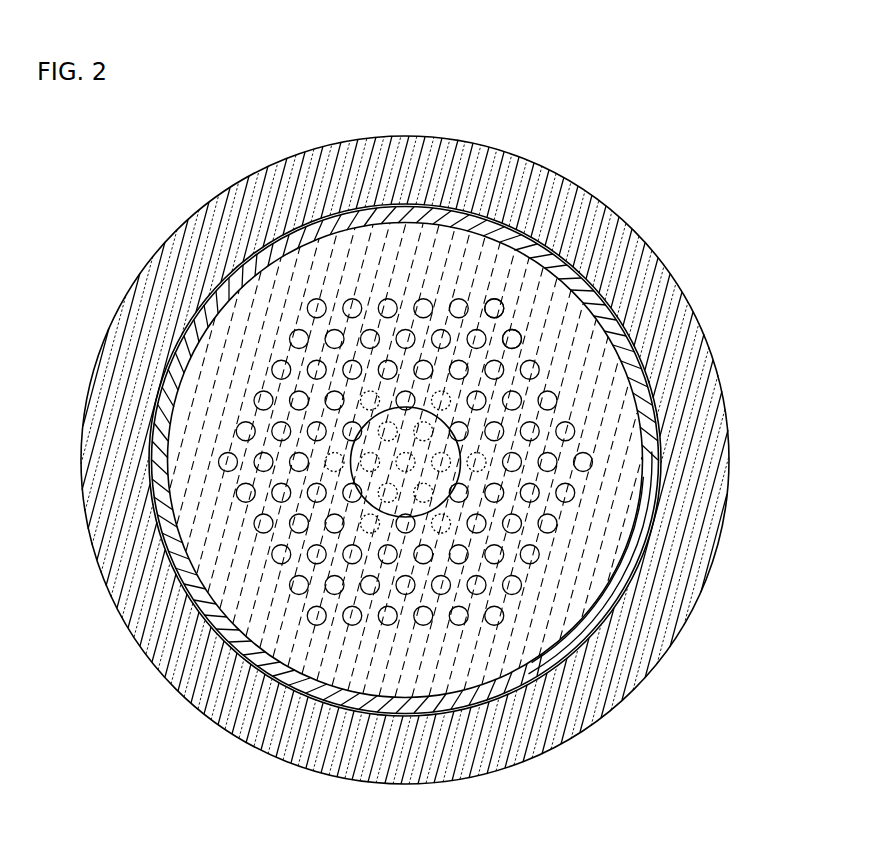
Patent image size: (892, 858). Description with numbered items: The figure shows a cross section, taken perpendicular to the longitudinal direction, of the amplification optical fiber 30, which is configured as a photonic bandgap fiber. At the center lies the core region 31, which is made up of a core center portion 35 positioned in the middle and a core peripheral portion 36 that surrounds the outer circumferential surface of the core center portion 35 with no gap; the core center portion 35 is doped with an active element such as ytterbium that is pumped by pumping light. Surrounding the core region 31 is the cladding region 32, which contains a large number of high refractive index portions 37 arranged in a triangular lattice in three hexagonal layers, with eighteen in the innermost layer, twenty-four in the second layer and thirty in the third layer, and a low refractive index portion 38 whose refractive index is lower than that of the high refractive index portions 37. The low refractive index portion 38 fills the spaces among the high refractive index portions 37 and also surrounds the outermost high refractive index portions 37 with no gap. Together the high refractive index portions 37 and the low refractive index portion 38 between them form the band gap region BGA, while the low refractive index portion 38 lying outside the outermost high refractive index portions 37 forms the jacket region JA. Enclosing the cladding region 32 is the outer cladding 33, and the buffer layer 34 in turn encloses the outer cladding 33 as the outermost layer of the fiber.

The amplification optical fiber 30 is at (660, 152).
The core region 31 is at (760, 292).
The cladding region 32 is at (700, 203).
The outer cladding 33 is at (647, 545).
The buffer layer 34 is at (690, 492).
The core center portion 35 is at (417, 448).
The core peripheral portion 36 is at (465, 450).
The high refractive index portions 37 is at (520, 337).
The low refractive index portion 38 is at (507, 318).
The jacket region JA is at (395, 248).
The band gap region BGA is at (478, 303).